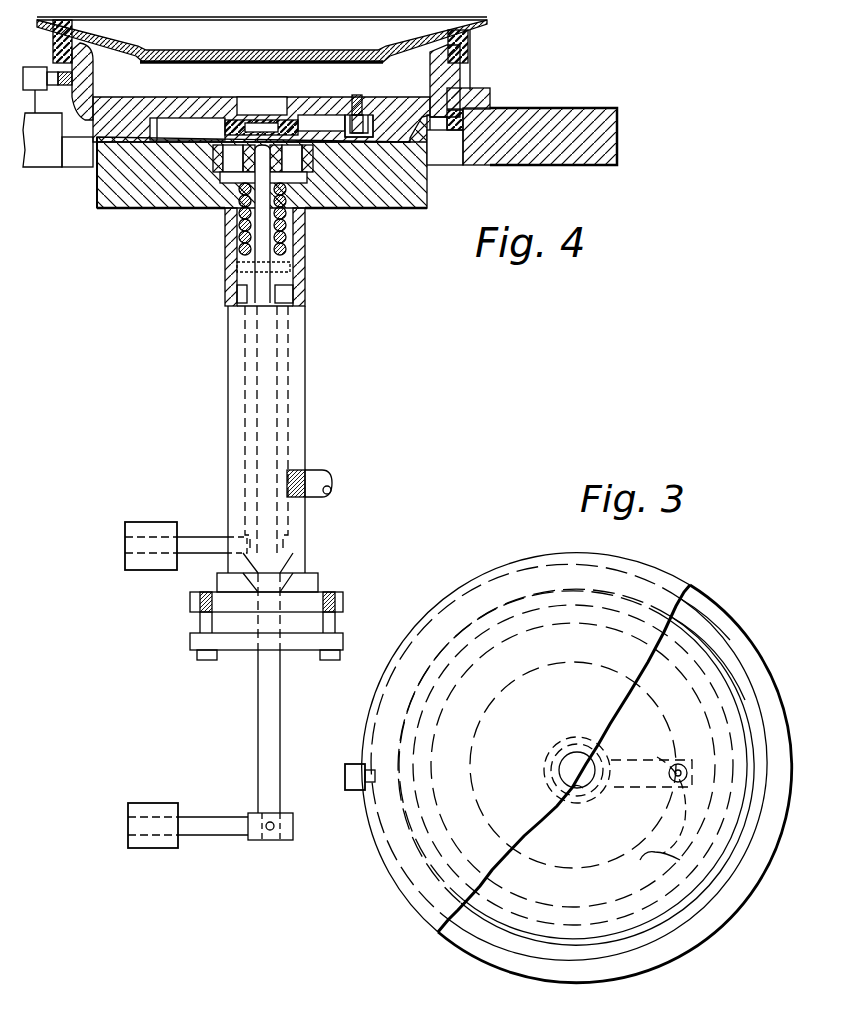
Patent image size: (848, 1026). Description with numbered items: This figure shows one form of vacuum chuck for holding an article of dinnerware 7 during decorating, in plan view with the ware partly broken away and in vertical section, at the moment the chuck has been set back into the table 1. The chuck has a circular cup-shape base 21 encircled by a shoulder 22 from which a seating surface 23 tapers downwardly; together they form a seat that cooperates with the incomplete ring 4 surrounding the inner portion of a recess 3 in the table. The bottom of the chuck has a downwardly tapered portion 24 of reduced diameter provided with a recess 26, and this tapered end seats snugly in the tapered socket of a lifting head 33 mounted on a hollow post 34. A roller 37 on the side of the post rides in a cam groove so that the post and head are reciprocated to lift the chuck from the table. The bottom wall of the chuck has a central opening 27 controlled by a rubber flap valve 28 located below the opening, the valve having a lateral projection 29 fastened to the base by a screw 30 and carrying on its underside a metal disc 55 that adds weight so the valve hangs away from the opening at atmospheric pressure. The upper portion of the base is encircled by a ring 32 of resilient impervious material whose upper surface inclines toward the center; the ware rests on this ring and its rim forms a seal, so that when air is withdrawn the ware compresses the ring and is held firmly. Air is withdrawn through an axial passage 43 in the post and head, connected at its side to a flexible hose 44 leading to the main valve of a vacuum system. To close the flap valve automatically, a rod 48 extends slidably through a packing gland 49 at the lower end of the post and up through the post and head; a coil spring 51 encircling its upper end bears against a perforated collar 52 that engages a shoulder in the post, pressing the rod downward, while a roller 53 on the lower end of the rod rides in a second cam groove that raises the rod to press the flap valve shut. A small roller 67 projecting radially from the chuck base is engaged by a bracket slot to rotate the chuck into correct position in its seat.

In FIG. 4, the table 1 is at (577, 123).
In FIG. 4, the recess 3 is at (440, 158).
In FIG. 4, the ring 4 is at (488, 102).
In FIG. 4, the article of dinnerware 7 is at (455, 22).
In FIG. 3, the article of dinnerware 7 is at (535, 548).
In FIG. 4, the cup-shape base 21 is at (82, 92).
In FIG. 3, the cup-shape base 21 is at (740, 697).
In FIG. 4, the shoulder 22 is at (461, 90).
In FIG. 4, the seating surface 23 is at (452, 118).
In FIG. 4, the tapered portion 24 is at (128, 192).
In FIG. 4, the recess 26 is at (150, 142).
In FIG. 3, the recess 26 is at (683, 857).
In FIG. 4, the central opening 27 is at (267, 107).
In FIG. 3, the central opening 27 is at (583, 803).
In FIG. 4, the flap valve 28 is at (168, 125).
In FIG. 3, the flap valve 28 is at (595, 782).
In FIG. 4, the lateral projection 29 is at (320, 110).
In FIG. 3, the lateral projection 29 is at (760, 733).
In FIG. 4, the screw 30 is at (362, 96).
In FIG. 4, the ring 32 is at (468, 52).
In FIG. 3, the ring 32 is at (720, 637).
In FIG. 4, the lifting head 33 is at (125, 195).
In FIG. 4, the hollow post 34 is at (230, 296).
In FIG. 4, the roller 37 is at (158, 530).
In FIG. 4, the axial passage 43 is at (278, 295).
In FIG. 4, the flexible hose 44 is at (313, 477).
In FIG. 4, the rod 48 is at (263, 290).
In FIG. 4, the packing gland 49 is at (300, 587).
In FIG. 4, the coil spring 51 is at (283, 244).
In FIG. 4, the perforated collar 52 is at (291, 268).
In FIG. 4, the roller 53 is at (158, 808).
In FIG. 4, the metal disc 55 is at (232, 135).
In FIG. 4, the roller 67 is at (33, 68).
In FIG. 3, the roller 67 is at (355, 762).